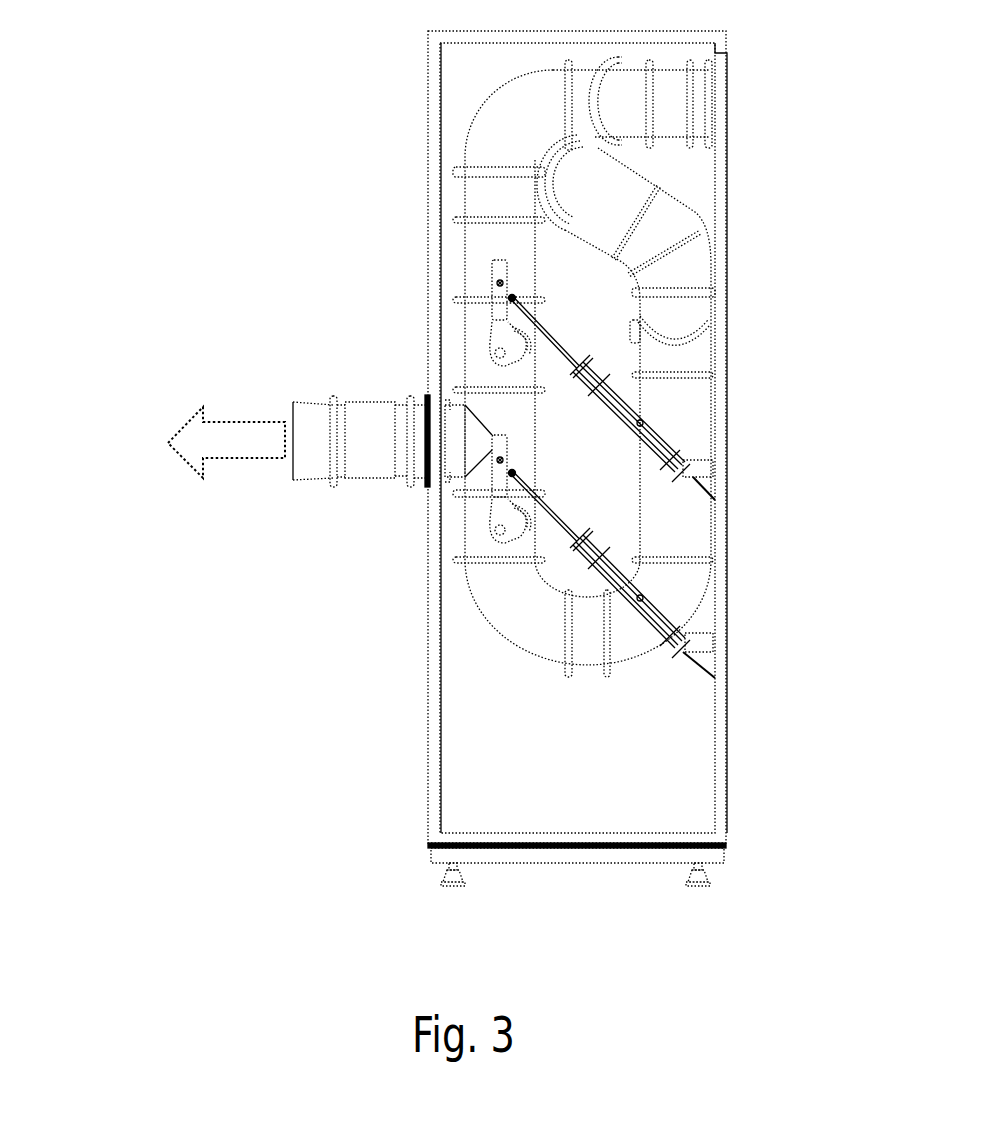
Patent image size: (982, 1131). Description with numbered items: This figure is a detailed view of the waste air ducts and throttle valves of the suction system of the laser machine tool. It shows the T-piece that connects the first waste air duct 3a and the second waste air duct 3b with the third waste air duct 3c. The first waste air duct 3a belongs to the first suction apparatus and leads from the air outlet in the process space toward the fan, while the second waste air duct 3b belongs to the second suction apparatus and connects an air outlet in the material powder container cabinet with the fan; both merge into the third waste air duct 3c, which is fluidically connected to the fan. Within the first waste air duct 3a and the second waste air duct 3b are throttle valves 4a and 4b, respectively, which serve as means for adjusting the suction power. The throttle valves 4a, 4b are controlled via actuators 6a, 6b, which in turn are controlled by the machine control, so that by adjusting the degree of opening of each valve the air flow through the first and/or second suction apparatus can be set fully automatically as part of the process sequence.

The first waste air duct 3a is at (477, 155).
The second waste air duct 3b is at (665, 272).
The third waste air duct 3c is at (380, 475).
The throttle valve 4a is at (495, 298).
The throttle valve 4b is at (498, 487).
The actuator 6a is at (647, 425).
The actuator 6b is at (647, 612).